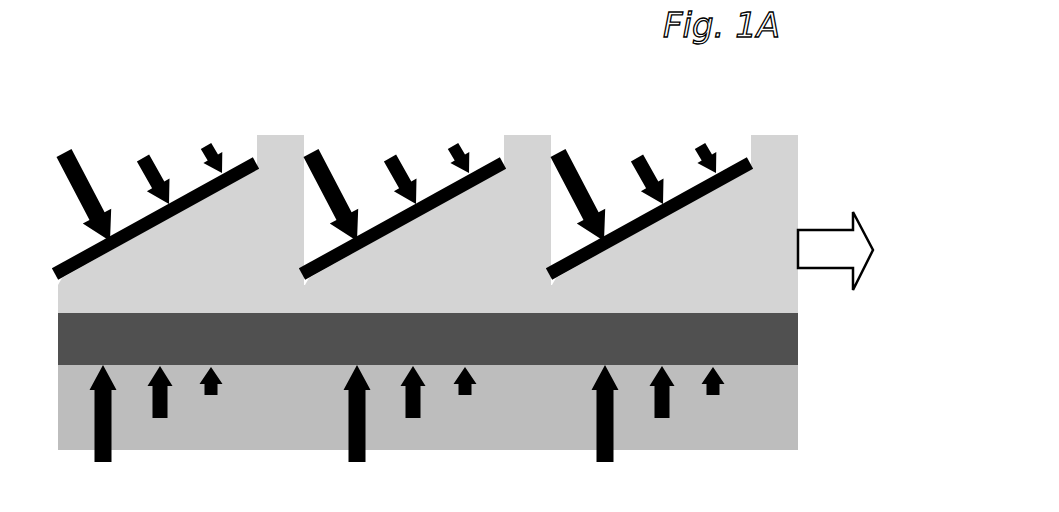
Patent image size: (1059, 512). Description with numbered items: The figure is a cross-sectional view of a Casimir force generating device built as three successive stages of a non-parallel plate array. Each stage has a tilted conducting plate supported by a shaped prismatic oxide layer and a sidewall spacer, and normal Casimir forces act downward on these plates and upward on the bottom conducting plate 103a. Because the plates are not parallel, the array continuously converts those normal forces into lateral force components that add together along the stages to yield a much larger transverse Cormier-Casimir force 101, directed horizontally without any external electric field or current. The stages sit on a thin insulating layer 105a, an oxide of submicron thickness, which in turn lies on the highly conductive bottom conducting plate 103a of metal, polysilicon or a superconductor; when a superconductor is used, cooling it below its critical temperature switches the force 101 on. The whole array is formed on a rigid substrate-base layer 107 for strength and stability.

The Cormier-Casimir force vector 101 is at (851, 258).
The bottom conducting plate 103a is at (798, 337).
The thin insulating layer 105a is at (435, 310).
The rigid substrate-base layer 107 is at (534, 425).